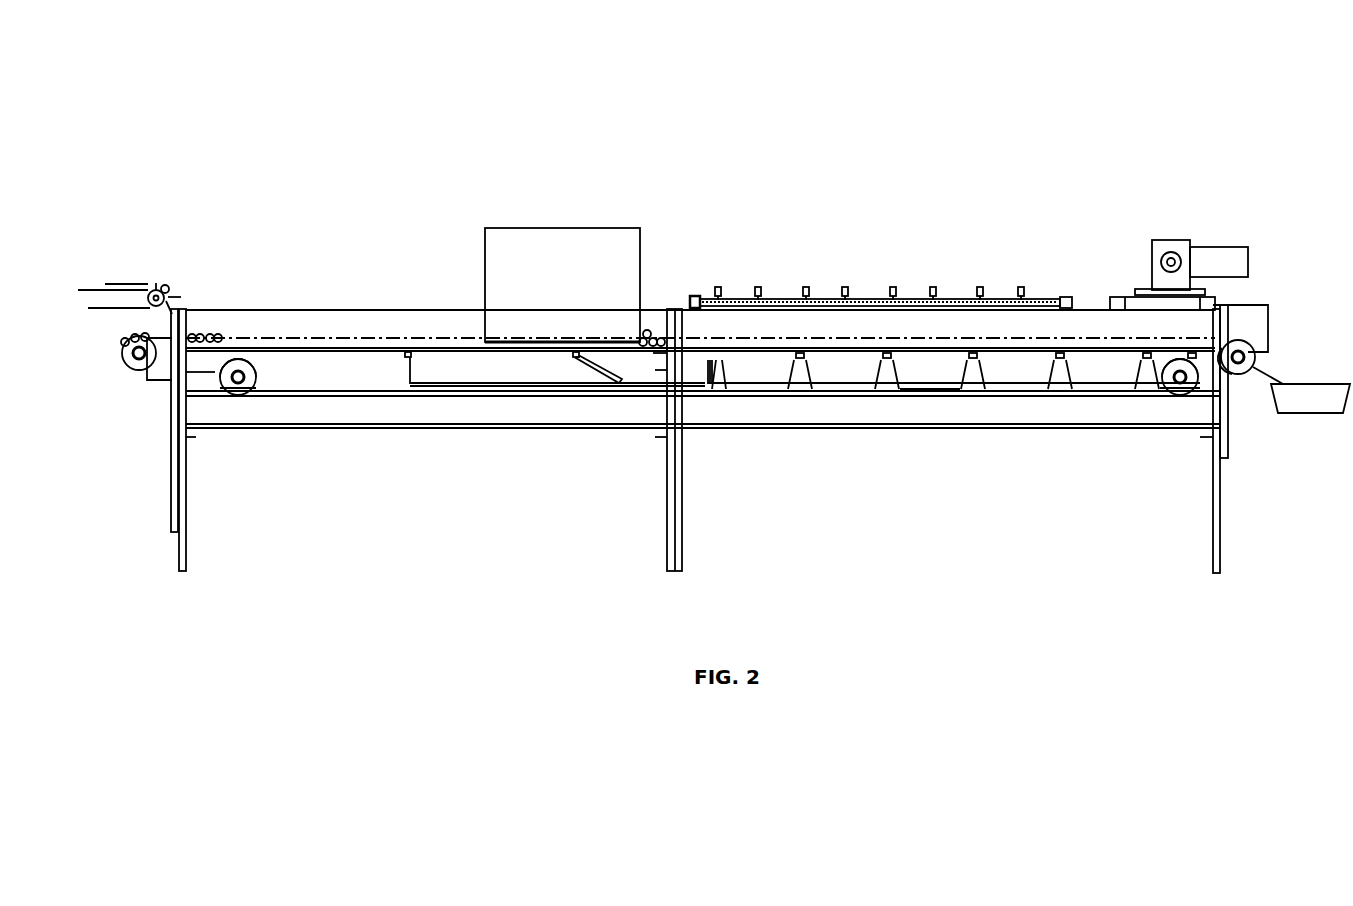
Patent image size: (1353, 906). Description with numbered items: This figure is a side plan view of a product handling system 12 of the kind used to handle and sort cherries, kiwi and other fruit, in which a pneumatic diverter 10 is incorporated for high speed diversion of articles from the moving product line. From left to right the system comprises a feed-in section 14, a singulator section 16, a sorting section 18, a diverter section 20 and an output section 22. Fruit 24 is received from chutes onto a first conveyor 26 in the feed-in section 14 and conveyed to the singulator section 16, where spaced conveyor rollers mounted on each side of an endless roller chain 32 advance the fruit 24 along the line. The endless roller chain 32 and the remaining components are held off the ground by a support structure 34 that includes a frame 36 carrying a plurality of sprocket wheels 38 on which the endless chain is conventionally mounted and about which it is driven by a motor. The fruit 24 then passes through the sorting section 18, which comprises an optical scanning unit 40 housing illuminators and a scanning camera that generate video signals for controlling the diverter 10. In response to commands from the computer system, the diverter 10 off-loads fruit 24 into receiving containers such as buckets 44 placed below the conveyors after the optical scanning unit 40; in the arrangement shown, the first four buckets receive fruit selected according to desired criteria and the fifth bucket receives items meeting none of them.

The pneumatic diverter 10 is at (722, 293).
The product handling system 12 is at (709, 297).
The feed-in section 14 is at (118, 266).
The singulator section 16 is at (232, 297).
The sorting section 18 is at (556, 255).
The diverter section 20 is at (840, 256).
The output section 22 is at (841, 372).
The fruit 24 is at (167, 288).
The first conveyor 26 is at (85, 290).
The endless roller chain 32 is at (320, 336).
The support structure 34 is at (660, 492).
The frame 36 is at (186, 478).
The sprocket wheels 38 is at (250, 368).
The optical scanning unit 40 is at (625, 258).
The buckets 44 is at (928, 374).